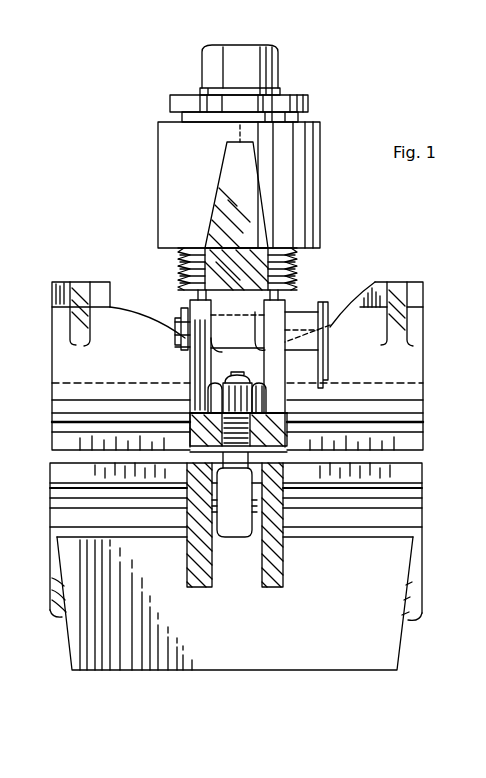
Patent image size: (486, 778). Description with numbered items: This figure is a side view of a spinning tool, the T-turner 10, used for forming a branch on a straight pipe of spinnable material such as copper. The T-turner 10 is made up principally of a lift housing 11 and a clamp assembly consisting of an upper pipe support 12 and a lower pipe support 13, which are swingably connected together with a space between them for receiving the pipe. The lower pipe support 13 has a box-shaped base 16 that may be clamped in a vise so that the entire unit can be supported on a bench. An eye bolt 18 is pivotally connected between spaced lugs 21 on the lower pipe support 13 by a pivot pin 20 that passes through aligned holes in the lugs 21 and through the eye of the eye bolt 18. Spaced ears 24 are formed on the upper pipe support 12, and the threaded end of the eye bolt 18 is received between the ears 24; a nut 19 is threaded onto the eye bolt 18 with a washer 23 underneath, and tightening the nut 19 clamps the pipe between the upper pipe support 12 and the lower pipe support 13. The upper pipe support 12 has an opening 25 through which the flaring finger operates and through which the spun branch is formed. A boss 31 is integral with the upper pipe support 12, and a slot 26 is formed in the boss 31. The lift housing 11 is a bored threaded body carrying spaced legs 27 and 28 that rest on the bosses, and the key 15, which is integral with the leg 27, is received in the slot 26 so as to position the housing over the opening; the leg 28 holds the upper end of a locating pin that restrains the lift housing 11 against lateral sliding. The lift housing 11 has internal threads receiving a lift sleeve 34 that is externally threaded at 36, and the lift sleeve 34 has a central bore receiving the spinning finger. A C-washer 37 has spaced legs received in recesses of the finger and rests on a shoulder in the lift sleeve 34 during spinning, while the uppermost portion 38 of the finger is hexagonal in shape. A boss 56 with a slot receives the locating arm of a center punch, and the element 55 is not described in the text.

The T-turner 10 is at (413, 281).
The lift housing 11 is at (322, 230).
The upper pipe support 12 is at (425, 401).
The lower pipe support 13 is at (424, 526).
The key 15 is at (220, 358).
The base 16 is at (372, 655).
The eye bolt 18 is at (240, 375).
The nut 19 is at (268, 388).
The pivot pin 20 is at (222, 503).
The lugs 21 is at (262, 562).
The washer 23 is at (275, 410).
The ears 24 is at (238, 441).
The opening 25 is at (322, 320).
The slot 26 is at (286, 323).
The leg 27 is at (264, 272).
The leg 28 is at (188, 308).
The boss 31 is at (292, 347).
The lift sleeve 34 is at (310, 104).
The external threads 36 is at (299, 275).
The C-washer 37 is at (284, 91).
The uppermost portion 38 is at (280, 56).
The right flange 55 is at (426, 294).
The boss 56 is at (68, 283).